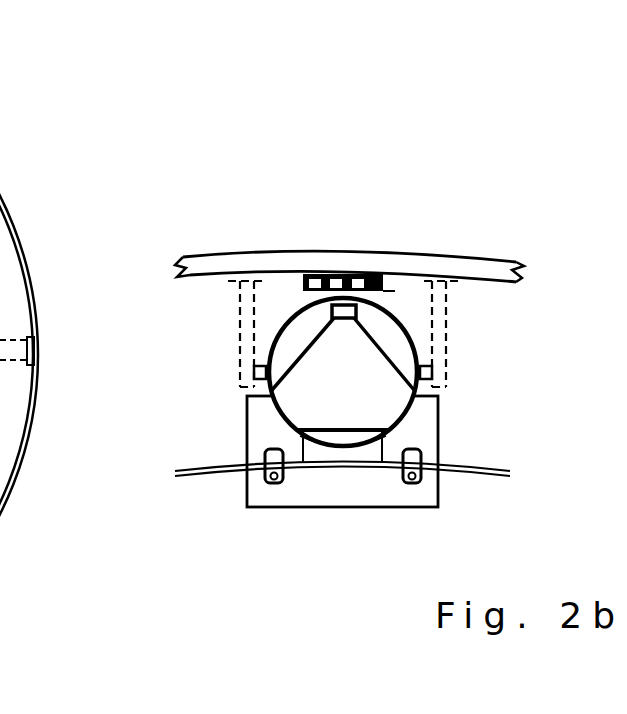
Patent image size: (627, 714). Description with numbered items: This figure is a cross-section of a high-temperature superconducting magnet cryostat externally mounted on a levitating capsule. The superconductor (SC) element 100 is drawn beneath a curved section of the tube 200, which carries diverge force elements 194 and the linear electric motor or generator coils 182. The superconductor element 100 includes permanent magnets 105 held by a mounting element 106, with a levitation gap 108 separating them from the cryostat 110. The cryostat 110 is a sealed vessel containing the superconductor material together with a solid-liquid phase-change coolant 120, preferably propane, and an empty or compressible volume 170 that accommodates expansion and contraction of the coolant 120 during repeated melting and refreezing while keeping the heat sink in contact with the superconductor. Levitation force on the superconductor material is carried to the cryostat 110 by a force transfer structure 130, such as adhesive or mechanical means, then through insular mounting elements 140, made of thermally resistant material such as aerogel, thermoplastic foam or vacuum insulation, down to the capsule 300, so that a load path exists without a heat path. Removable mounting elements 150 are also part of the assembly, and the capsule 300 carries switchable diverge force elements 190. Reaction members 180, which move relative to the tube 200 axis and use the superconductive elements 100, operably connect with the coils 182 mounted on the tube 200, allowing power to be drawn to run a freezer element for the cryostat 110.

The superconductor element 100 is at (332, 306).
The permanent magnets 105 is at (358, 289).
The mounting element 106 is at (367, 290).
The levitation gap 108 is at (380, 297).
The cryostat 110 is at (296, 362).
The coolant 120 is at (352, 352).
The force transfer structure 130 is at (300, 317).
The insular mounting elements 140 is at (250, 407).
The removable mounting elements 150 is at (418, 490).
The expansion mitigation means 170 is at (295, 441).
The reaction members 180 is at (420, 366).
The linear electric motor or generator coils 182 is at (430, 387).
The switchable diverge force elements 190 is at (0, 410).
The diverge force elements 194 is at (8, 340).
The tube 200 is at (190, 276).
The capsule 300 is at (220, 475).